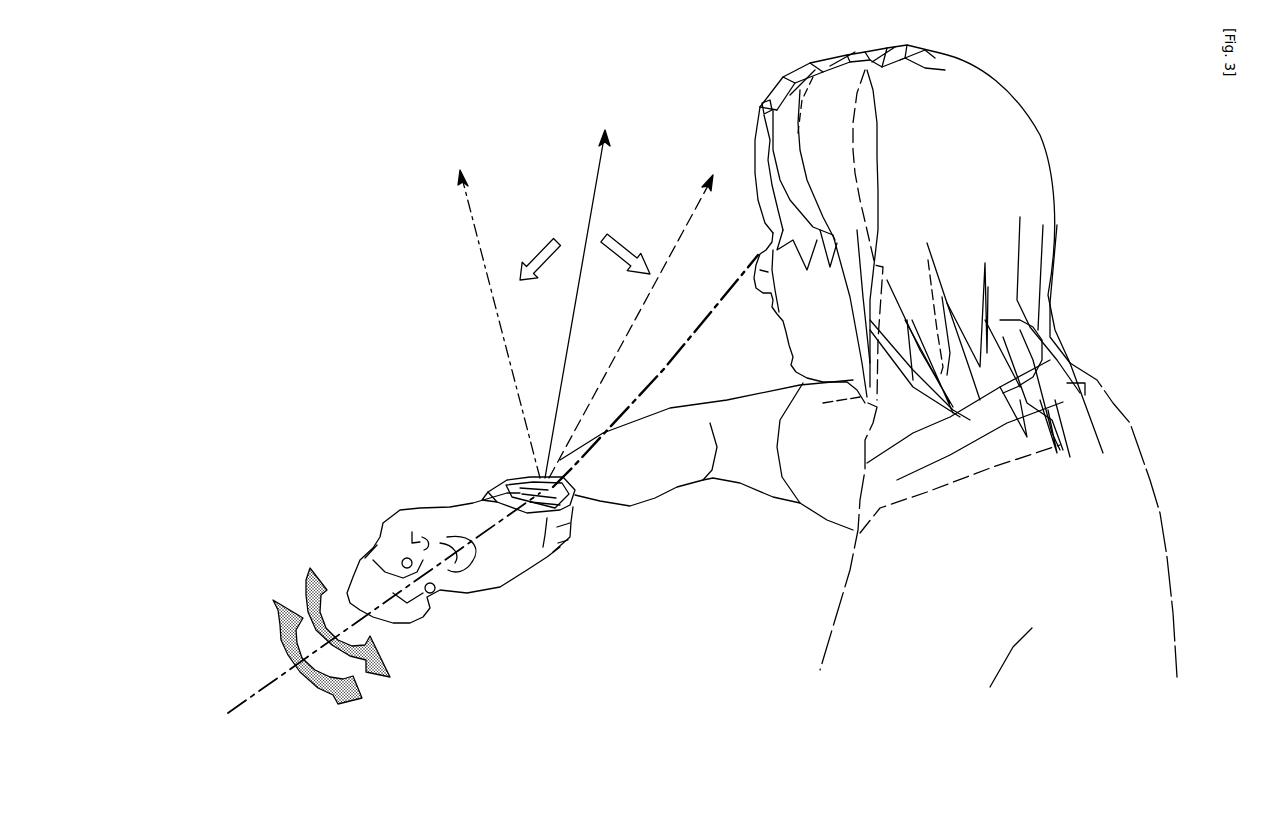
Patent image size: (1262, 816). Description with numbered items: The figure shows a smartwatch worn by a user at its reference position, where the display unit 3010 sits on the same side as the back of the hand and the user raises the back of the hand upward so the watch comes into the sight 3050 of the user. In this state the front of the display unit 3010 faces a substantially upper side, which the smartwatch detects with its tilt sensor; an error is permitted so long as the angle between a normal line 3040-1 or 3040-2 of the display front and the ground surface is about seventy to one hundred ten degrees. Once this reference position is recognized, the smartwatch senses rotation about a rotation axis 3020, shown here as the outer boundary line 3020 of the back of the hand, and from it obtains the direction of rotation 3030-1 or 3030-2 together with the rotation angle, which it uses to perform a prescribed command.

The display unit 3010 is at (580, 498).
The rotation axis 3020 is at (257, 693).
The direction of rotation 3030-1 is at (273, 600).
The direction of rotation 3030-2 is at (313, 570).
The normal line 3040-1 is at (497, 320).
The normal line 3040-2 is at (670, 257).
The sight of the user 3050 is at (665, 357).